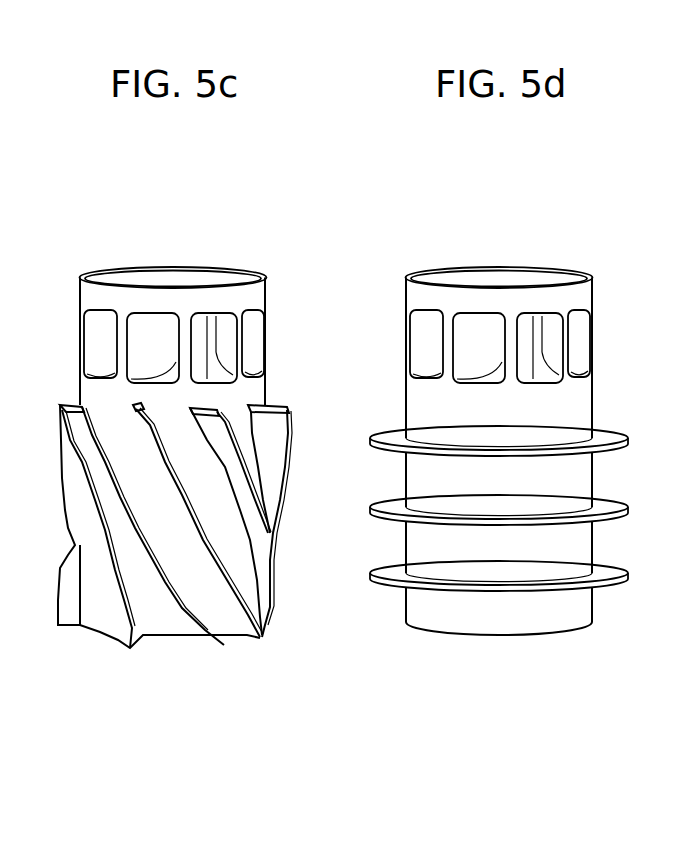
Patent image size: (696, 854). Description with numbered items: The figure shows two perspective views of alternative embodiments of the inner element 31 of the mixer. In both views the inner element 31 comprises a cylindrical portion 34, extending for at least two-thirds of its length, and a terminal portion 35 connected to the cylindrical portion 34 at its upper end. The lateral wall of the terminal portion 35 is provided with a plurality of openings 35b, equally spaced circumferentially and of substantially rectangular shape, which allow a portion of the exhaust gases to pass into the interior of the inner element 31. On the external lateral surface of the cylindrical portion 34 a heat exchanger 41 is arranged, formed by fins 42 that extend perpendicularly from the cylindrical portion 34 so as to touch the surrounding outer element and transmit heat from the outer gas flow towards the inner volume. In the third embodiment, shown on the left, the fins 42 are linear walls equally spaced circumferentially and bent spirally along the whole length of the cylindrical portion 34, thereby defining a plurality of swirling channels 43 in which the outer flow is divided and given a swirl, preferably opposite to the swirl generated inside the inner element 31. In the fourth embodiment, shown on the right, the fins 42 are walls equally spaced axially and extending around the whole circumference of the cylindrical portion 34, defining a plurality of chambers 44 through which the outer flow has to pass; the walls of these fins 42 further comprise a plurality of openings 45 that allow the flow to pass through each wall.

In FIG. 5c, the inner element 31 is at (175, 472).
In FIG. 5d, the inner element 31 is at (502, 466).
In FIG. 5c, the cylindrical portion 34 is at (184, 348).
In FIG. 5d, the cylindrical portion 34 is at (486, 451).
In FIG. 5c, the terminal portion 35 is at (160, 296).
In FIG. 5d, the terminal portion 35 is at (486, 296).
In FIG. 5c, the opening 35b is at (145, 335).
In FIG. 5d, the opening 35b is at (470, 335).
In FIG. 5c, the heat exchanger 41 is at (175, 540).
In FIG. 5d, the heat exchanger 41 is at (502, 478).
In FIG. 5c, the fin 42 is at (287, 433).
In FIG. 5d, the fin 42 is at (623, 535).
In FIG. 5c, the channel 43 is at (137, 606).
In FIG. 5d, the chamber 44 is at (418, 552).
In FIG. 5d, the opening 45 is at (593, 433).